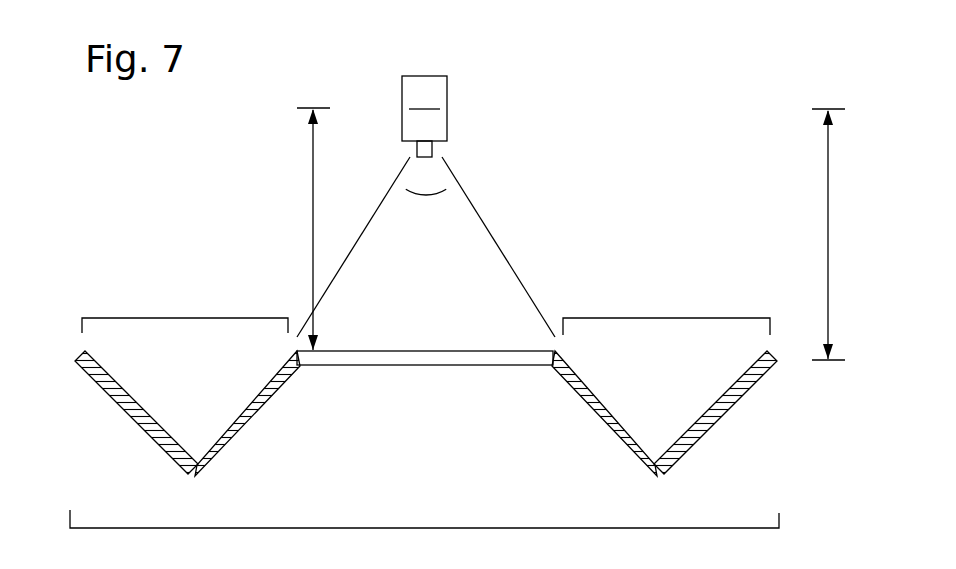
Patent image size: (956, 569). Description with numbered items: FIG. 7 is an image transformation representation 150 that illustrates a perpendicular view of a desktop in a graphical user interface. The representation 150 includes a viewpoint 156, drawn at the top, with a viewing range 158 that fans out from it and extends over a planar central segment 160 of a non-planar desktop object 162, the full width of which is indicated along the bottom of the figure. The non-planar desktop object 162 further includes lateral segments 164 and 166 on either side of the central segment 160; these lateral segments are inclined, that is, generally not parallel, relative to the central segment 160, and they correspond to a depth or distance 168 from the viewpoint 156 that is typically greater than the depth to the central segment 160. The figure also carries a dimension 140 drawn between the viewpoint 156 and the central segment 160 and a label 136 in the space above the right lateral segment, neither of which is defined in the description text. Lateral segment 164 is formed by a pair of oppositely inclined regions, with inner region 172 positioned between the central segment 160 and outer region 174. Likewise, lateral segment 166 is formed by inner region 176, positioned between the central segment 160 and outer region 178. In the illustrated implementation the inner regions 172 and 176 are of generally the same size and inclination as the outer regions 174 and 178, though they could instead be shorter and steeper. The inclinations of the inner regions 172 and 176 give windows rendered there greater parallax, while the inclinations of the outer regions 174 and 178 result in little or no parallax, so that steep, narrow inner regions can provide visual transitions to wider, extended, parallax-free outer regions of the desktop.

The image transformation representation 150 is at (616, 123).
The viewpoint 156 is at (438, 130).
The viewing range 158 is at (437, 190).
The planar central segment 160 is at (385, 350).
The distance from light source to plate 140 is at (313, 238).
The depth or distance 168 is at (828, 238).
The irradiation region 136 is at (643, 240).
The lateral segment 164 is at (193, 318).
The lateral segment 166 is at (675, 318).
The non-planar desktop object 162 is at (781, 517).
The outer region 174 is at (109, 381).
The inner region 172 is at (278, 395).
The inner region 176 is at (583, 398).
The outer region 178 is at (748, 383).